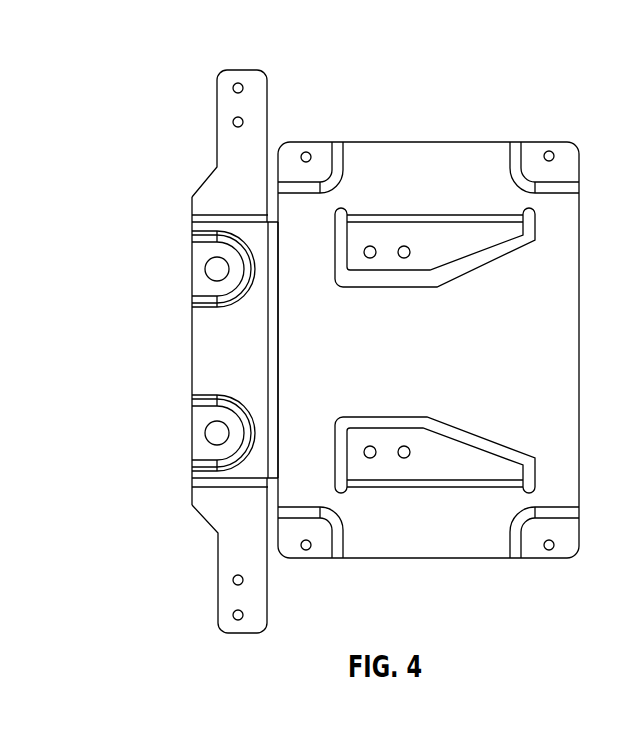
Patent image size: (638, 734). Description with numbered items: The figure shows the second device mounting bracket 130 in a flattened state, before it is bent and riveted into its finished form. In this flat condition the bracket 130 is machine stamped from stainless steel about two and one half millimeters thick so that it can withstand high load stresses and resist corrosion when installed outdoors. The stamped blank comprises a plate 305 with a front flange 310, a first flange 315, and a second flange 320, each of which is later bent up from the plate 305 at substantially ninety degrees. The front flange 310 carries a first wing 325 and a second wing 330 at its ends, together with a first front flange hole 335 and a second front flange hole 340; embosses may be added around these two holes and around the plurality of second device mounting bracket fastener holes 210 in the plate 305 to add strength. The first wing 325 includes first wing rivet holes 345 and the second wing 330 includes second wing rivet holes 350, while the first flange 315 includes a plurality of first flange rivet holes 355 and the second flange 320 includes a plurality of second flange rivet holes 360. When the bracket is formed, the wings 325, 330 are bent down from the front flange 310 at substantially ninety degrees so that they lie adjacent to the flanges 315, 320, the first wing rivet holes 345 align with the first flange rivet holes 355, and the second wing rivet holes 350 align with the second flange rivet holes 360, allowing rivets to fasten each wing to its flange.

The second device mounting bracket 130 is at (106, 24).
The second device mounting bracket fastener holes 210 is at (306, 151).
The plate 305 is at (440, 142).
The front flange 310 is at (205, 358).
The first flange 315 is at (453, 248).
The second flange 320 is at (458, 462).
The first wing 325 is at (263, 72).
The second wing 330 is at (240, 635).
The first front flange hole 335 is at (203, 269).
The second front flange hole 340 is at (203, 435).
The first wing rivet holes 345 is at (232, 91).
The second wing rivet holes 350 is at (232, 582).
The first flange rivet holes 355 is at (404, 246).
The second flange rivet holes 360 is at (404, 446).